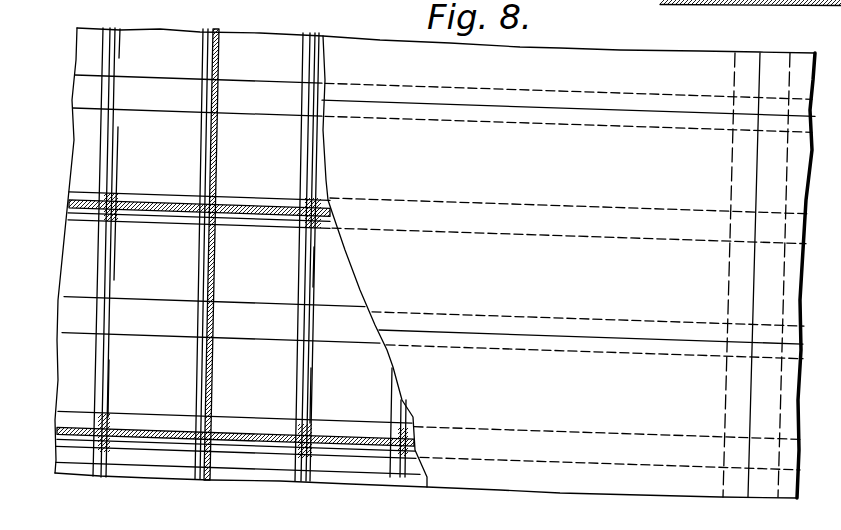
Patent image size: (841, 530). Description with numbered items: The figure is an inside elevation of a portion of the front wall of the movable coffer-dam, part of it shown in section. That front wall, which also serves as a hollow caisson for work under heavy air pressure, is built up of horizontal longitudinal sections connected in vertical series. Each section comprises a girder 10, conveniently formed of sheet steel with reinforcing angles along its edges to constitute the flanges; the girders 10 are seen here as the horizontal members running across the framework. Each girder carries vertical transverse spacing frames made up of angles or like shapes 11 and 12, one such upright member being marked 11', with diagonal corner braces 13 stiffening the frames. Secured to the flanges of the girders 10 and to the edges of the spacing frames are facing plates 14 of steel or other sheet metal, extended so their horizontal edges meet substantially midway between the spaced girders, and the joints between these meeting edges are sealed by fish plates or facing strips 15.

The girder 10 is at (240, 435).
The angle 11 is at (258, 255).
The upright post member 11' is at (234, 254).
The angle 12 is at (203, 220).
The diagonal corner brace 13 is at (118, 160).
The facing plate 14 is at (162, 36).
The facing strip 15 is at (286, 98).